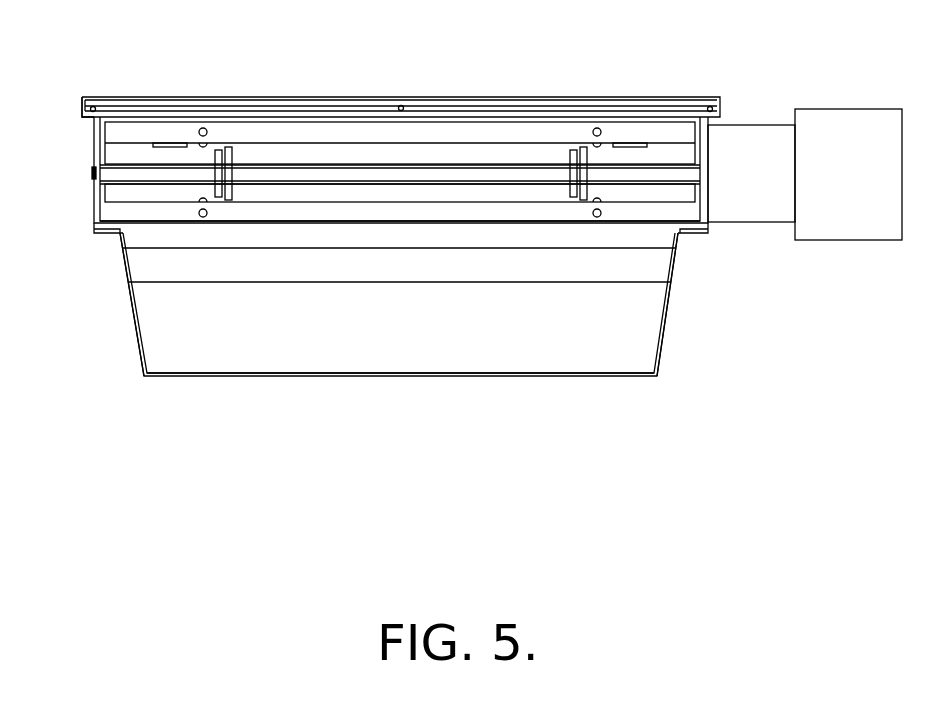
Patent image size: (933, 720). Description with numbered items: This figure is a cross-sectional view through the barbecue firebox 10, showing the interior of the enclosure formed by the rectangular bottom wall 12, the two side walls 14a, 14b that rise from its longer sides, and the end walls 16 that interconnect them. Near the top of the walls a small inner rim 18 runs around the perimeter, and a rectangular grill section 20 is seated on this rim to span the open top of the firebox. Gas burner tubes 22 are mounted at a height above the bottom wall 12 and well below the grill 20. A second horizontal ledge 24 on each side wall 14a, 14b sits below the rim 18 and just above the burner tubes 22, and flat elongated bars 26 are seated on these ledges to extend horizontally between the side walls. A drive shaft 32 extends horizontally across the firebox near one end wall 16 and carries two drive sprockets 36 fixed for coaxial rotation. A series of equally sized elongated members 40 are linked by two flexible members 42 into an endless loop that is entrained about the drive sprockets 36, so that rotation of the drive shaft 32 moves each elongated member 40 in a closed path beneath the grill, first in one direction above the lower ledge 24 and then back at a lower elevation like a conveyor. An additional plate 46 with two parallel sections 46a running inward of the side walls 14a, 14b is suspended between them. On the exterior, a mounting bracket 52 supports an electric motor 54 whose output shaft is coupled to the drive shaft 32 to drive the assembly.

The firebox 10 is at (167, 388).
The bottom wall 12 is at (567, 373).
The side wall 14a is at (128, 317).
The side wall 14b is at (667, 332).
The end wall 16 is at (248, 352).
The inner rim 18 is at (88, 118).
The grill section 20 is at (463, 105).
The gas burner tube 22 is at (548, 263).
The second horizontal ledge 24 is at (695, 235).
The bar 26 is at (405, 227).
The drive shaft 32 is at (475, 170).
The drive sprocket 36 is at (230, 155).
The elongated member 40 is at (352, 133).
The flexible member 42 is at (203, 127).
The additional plate 46 is at (170, 150).
The parallel section 46a is at (627, 140).
The mounting bracket 52 is at (758, 143).
The electric motor 54 is at (840, 132).